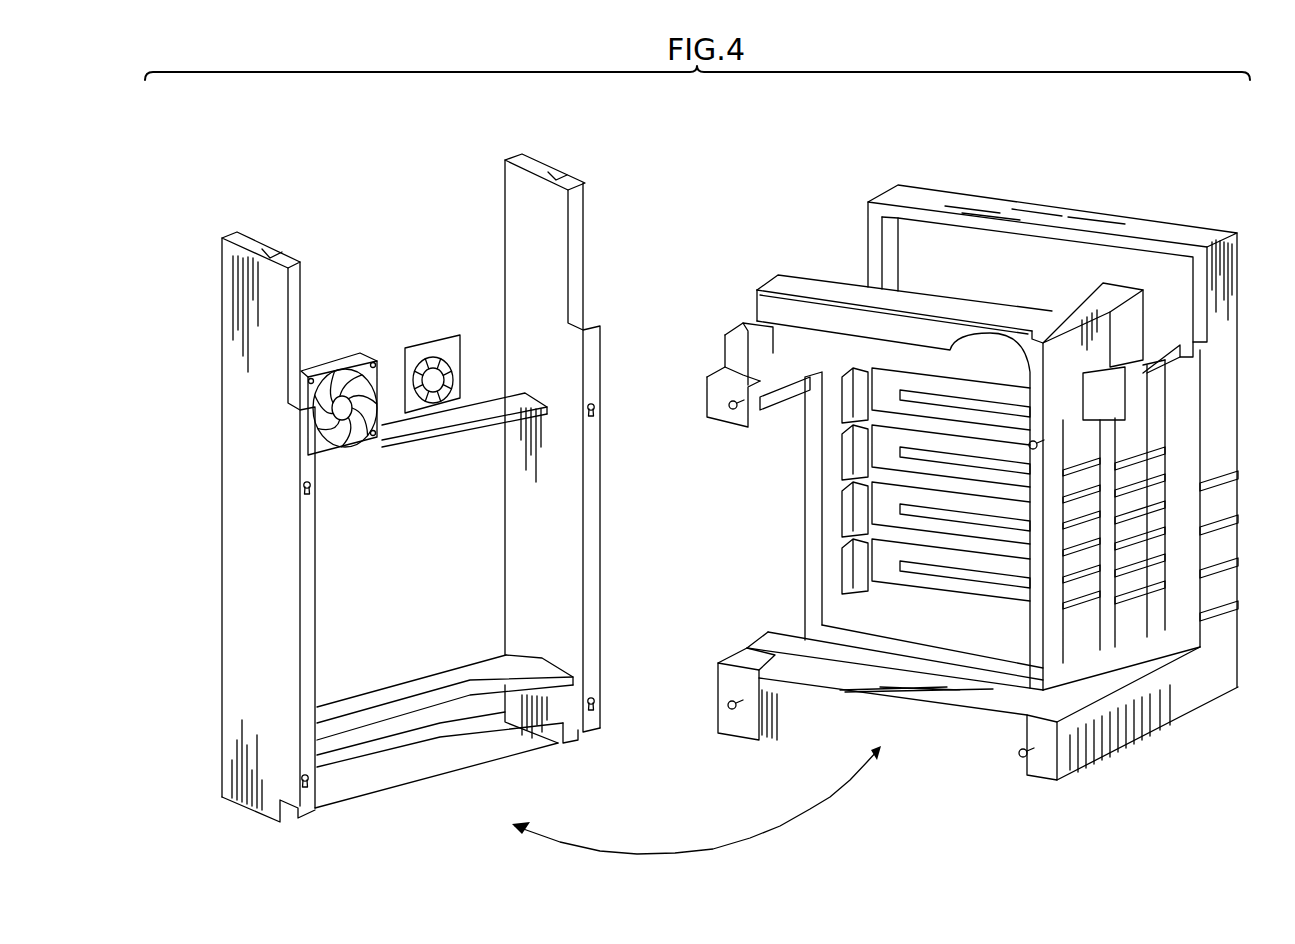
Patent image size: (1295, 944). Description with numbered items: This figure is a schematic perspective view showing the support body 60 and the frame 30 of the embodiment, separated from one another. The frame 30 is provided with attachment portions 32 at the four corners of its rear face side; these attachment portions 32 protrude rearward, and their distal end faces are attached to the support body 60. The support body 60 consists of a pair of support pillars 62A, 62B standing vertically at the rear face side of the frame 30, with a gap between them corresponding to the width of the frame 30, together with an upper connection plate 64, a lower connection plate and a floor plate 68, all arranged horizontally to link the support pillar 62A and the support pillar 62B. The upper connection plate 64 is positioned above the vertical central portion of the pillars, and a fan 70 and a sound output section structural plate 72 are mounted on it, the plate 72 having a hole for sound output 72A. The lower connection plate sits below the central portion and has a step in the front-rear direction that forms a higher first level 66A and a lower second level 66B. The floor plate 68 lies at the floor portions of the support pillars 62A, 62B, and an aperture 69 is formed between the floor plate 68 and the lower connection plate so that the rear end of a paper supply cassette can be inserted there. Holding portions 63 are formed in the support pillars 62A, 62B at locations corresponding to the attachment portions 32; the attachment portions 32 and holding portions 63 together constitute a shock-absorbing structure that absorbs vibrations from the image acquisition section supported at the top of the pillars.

The frame 30 is at (815, 179).
The attachment portions 32 is at (723, 418).
The support body 60 is at (406, 179).
The support pillar 62A is at (226, 518).
The support pillar 62B is at (597, 514).
The holding portions 63 is at (303, 486).
The upper connection plate 64 is at (404, 432).
The first level 66A is at (550, 672).
The second level 66B is at (507, 657).
The floor plate 68 is at (397, 768).
The aperture 69 is at (452, 776).
The fan 70 is at (342, 356).
The sound output section structural plate 72 is at (448, 344).
The hole for sound output 72A is at (433, 372).